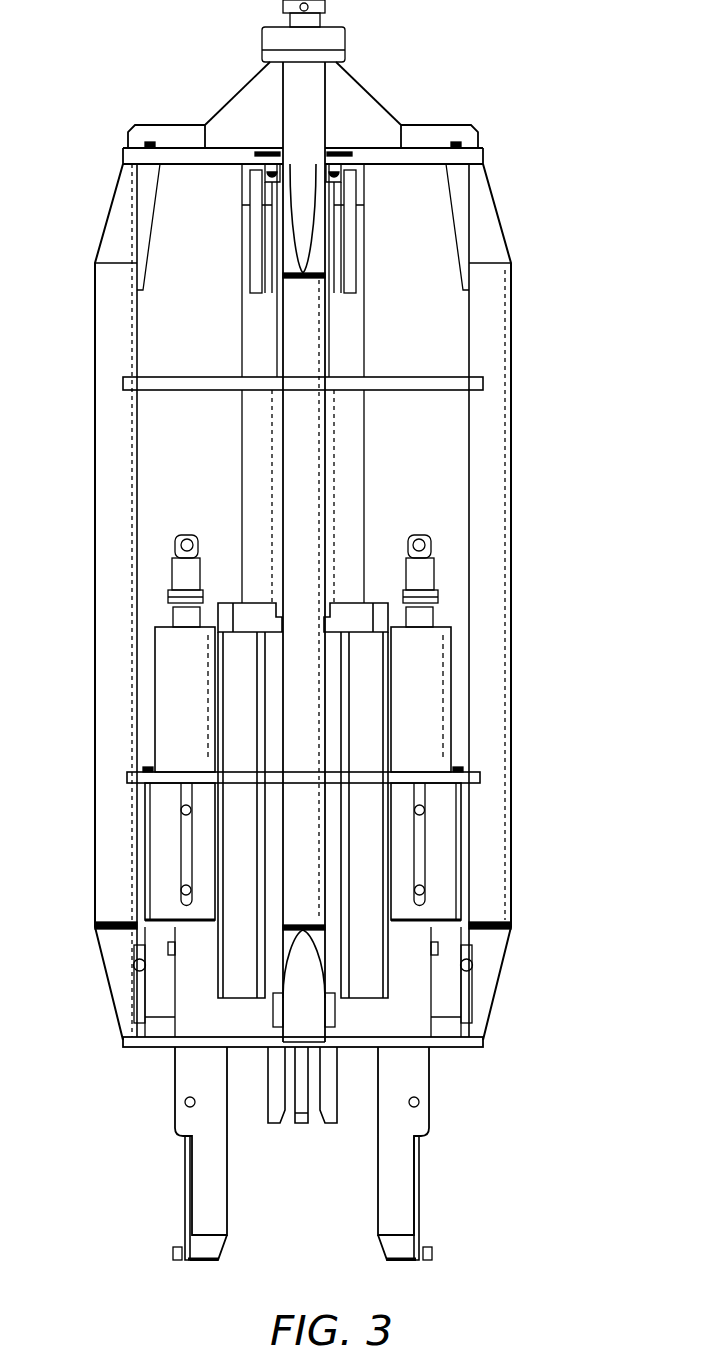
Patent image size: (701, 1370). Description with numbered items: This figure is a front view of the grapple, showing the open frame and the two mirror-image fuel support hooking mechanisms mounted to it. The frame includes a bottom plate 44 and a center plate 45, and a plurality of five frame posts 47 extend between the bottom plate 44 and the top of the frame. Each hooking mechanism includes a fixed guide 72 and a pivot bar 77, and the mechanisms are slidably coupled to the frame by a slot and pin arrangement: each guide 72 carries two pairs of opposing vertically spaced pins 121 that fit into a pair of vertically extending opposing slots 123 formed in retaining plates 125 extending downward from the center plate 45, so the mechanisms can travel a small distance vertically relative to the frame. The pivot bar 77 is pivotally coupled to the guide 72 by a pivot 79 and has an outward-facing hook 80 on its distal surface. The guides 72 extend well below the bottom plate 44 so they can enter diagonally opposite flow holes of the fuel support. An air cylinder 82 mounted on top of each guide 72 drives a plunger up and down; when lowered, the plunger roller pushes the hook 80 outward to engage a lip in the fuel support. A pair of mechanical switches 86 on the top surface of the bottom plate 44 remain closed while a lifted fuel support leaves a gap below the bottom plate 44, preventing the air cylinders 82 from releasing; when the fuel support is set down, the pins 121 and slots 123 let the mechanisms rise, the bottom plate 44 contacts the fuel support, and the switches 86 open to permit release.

The bottom plate 44 is at (130, 1047).
The center plate 45 is at (480, 778).
The frame posts 47 is at (495, 685).
The fixed guide 72 is at (196, 1171).
The pivot bar 77 is at (182, 1205).
The pivot 79 is at (184, 1104).
The hook 80 is at (172, 1256).
The air cylinder 82 is at (427, 657).
The mechanical switches 86 is at (137, 992).
The pins 121 is at (425, 812).
The slots 123 is at (420, 858).
The retaining plates 125 is at (433, 915).